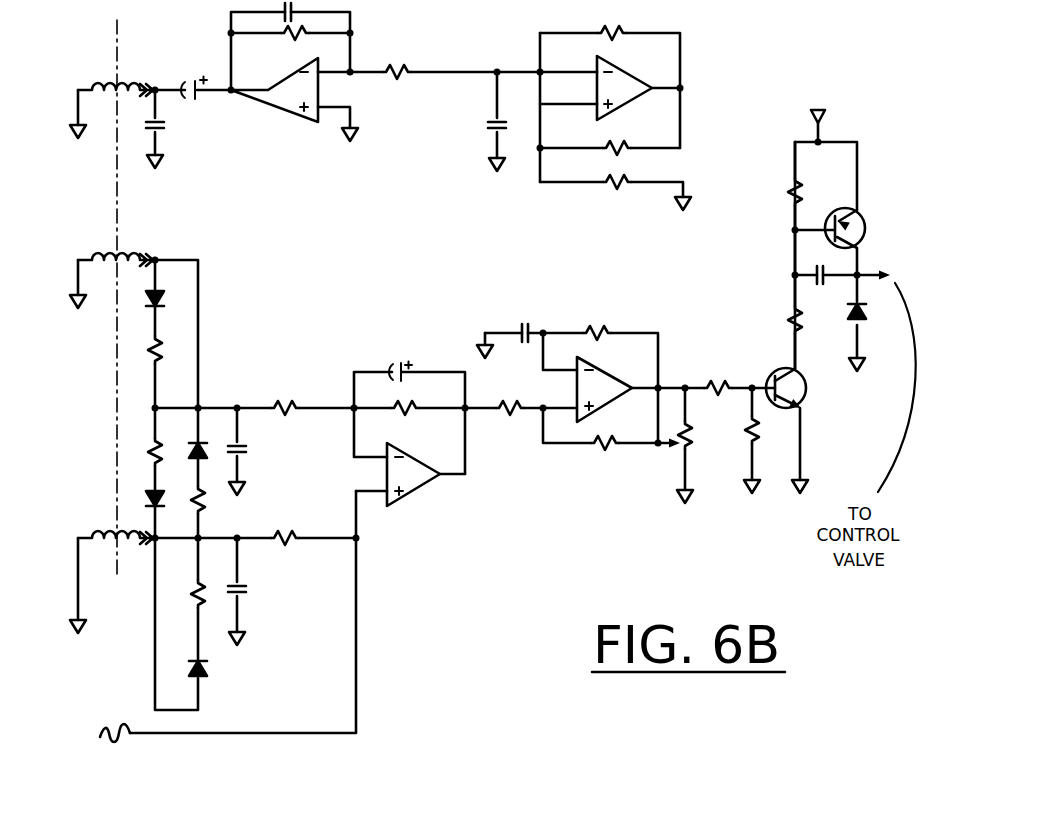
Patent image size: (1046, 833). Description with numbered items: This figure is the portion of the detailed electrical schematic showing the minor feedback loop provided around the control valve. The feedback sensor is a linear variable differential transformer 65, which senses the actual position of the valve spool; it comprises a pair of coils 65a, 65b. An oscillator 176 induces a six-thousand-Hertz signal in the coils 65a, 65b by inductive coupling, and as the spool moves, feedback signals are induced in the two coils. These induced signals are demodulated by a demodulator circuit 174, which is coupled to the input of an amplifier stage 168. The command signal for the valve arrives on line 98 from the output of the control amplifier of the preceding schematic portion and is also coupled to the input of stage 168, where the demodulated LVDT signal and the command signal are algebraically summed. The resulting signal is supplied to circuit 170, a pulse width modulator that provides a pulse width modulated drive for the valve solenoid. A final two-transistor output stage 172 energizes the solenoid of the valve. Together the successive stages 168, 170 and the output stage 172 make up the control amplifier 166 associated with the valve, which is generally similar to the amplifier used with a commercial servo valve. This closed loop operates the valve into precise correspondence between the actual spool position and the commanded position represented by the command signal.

The linear variable differential transformer 65 is at (127, 82).
The coil 65a is at (125, 253).
The coil 65b is at (110, 532).
The line 98 is at (113, 742).
The control amplifier 166 is at (403, 578).
The amplifier stage 168 is at (428, 488).
The pulse width modulator 170 is at (614, 374).
The two-transistor output stage 172 is at (831, 382).
The demodulator circuit 174 is at (231, 382).
The oscillator 176 is at (411, 169).